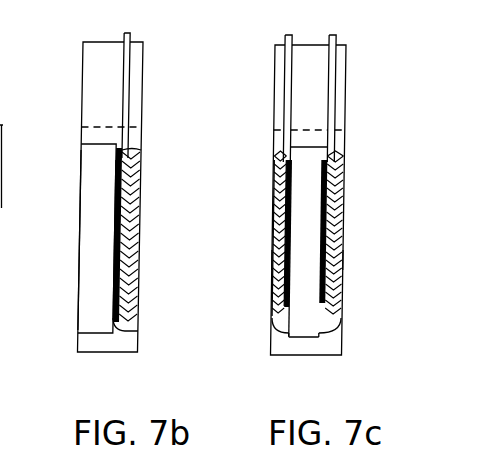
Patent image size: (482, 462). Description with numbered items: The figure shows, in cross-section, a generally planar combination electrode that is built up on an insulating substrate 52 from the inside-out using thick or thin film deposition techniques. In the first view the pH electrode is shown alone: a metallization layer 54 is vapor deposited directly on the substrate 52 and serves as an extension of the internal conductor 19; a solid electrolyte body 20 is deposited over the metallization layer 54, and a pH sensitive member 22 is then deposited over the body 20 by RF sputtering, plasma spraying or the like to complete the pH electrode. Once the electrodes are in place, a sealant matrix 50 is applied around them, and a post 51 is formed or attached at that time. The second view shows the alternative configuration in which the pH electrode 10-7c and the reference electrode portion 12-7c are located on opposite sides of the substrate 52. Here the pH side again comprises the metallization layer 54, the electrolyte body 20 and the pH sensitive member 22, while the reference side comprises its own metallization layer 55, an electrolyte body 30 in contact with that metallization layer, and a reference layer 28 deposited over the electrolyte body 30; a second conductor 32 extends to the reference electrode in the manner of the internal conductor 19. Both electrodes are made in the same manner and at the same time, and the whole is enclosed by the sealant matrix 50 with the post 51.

In FIG. 7B, the internal conductor 19 is at (131, 36).
In FIG. 7C, the internal conductor 19 is at (287, 42).
In FIG. 7B, the solid electrolyte body 20 is at (128, 157).
In FIG. 7C, the solid electrolyte body 20 is at (277, 328).
In FIG. 7B, the pH sensitive member 22 is at (135, 235).
In FIG. 7C, the pH sensitive member 22 is at (275, 204).
In FIG. 7C, the reference layer 28 is at (343, 212).
In FIG. 7C, the electrolyte body 30 is at (340, 330).
In FIG. 7C, the second tube 32 is at (337, 37).
In FIG. 7B, the sealant matrix 50 is at (118, 353).
In FIG. 7C, the sealant matrix 50 is at (346, 157).
In FIG. 7B, the post 51 is at (143, 98).
In FIG. 7C, the post 51 is at (346, 108).
In FIG. 7B, the insulating substrate 52 is at (78, 278).
In FIG. 7B, the metallization layer 54 is at (113, 213).
In FIG. 7C, the metallization layer 54 is at (280, 243).
In FIG. 7C, the metallization layer 55 is at (337, 278).
In FIG. 7C, the pH electrode 10-7c is at (260, 258).
In FIG. 7C, the reference electrode portion 12-7c is at (352, 258).